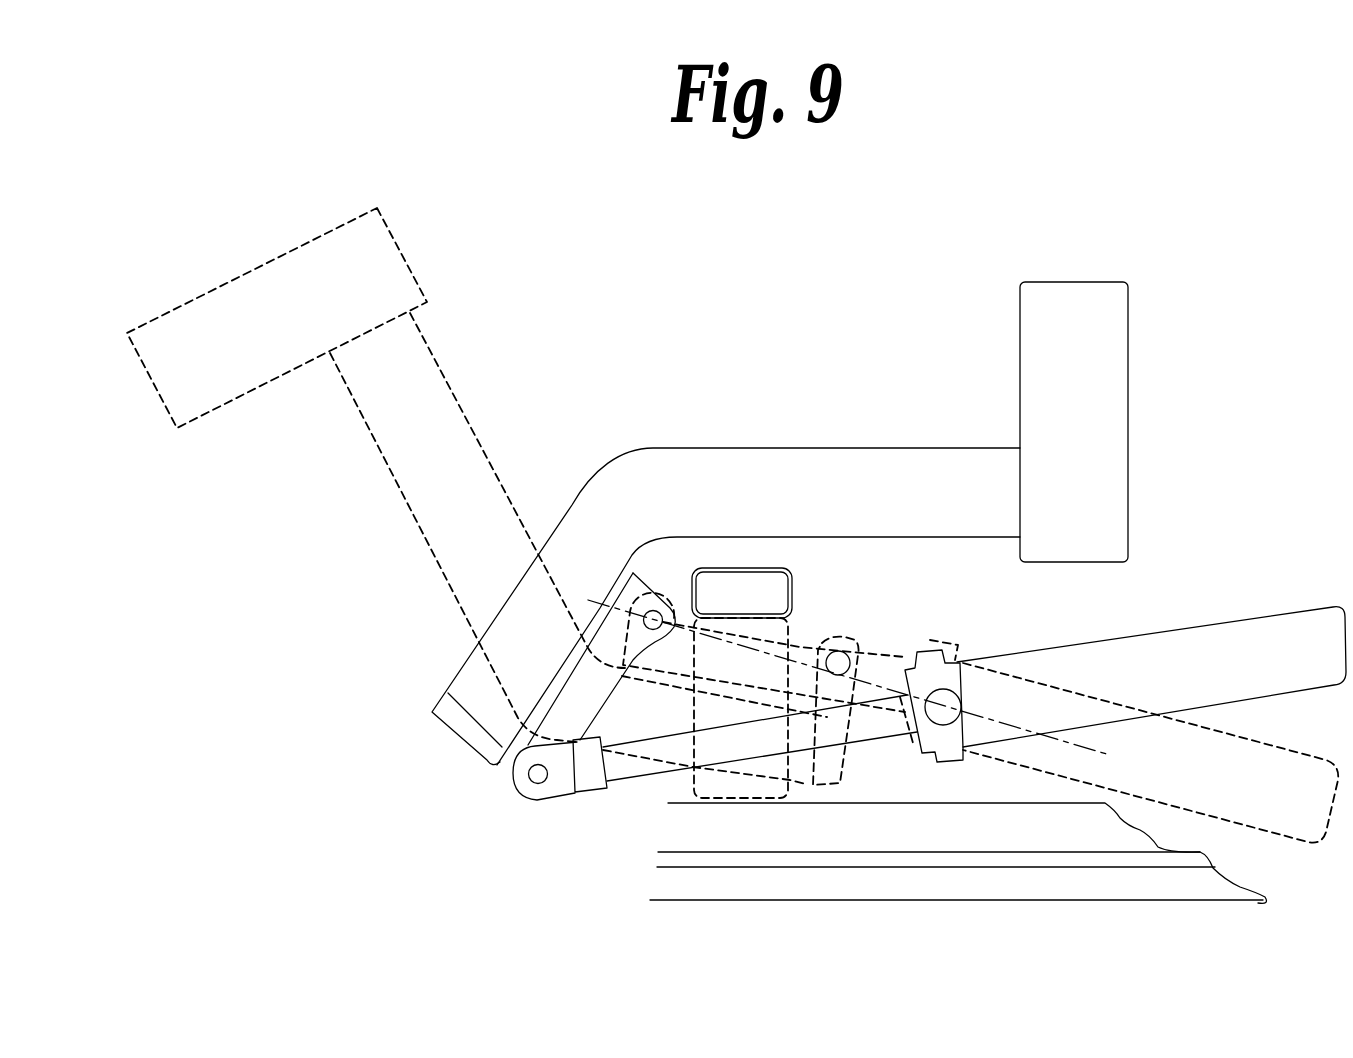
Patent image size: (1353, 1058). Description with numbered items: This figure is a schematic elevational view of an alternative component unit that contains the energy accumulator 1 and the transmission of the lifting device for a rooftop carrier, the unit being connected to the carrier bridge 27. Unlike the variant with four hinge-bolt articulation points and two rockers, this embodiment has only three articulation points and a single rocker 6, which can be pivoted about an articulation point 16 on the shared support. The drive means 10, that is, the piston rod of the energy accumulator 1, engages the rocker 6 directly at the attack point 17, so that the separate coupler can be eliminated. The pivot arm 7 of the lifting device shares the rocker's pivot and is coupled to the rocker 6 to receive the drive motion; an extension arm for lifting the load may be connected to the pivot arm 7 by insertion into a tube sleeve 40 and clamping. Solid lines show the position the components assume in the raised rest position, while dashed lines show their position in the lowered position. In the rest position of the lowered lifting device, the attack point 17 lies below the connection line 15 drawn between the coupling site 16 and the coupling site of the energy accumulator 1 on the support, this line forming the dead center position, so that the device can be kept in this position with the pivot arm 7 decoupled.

The energy accumulator 1 is at (1290, 613).
The rocker 6 is at (572, 712).
The pivot arm 7 is at (823, 462).
The drive means 10 is at (627, 770).
The connection line 15 is at (982, 718).
The articulation point 16 is at (656, 610).
The attack point 17 is at (538, 783).
The carrier bridge 27 is at (792, 577).
The tube sleeve 40 is at (1128, 405).